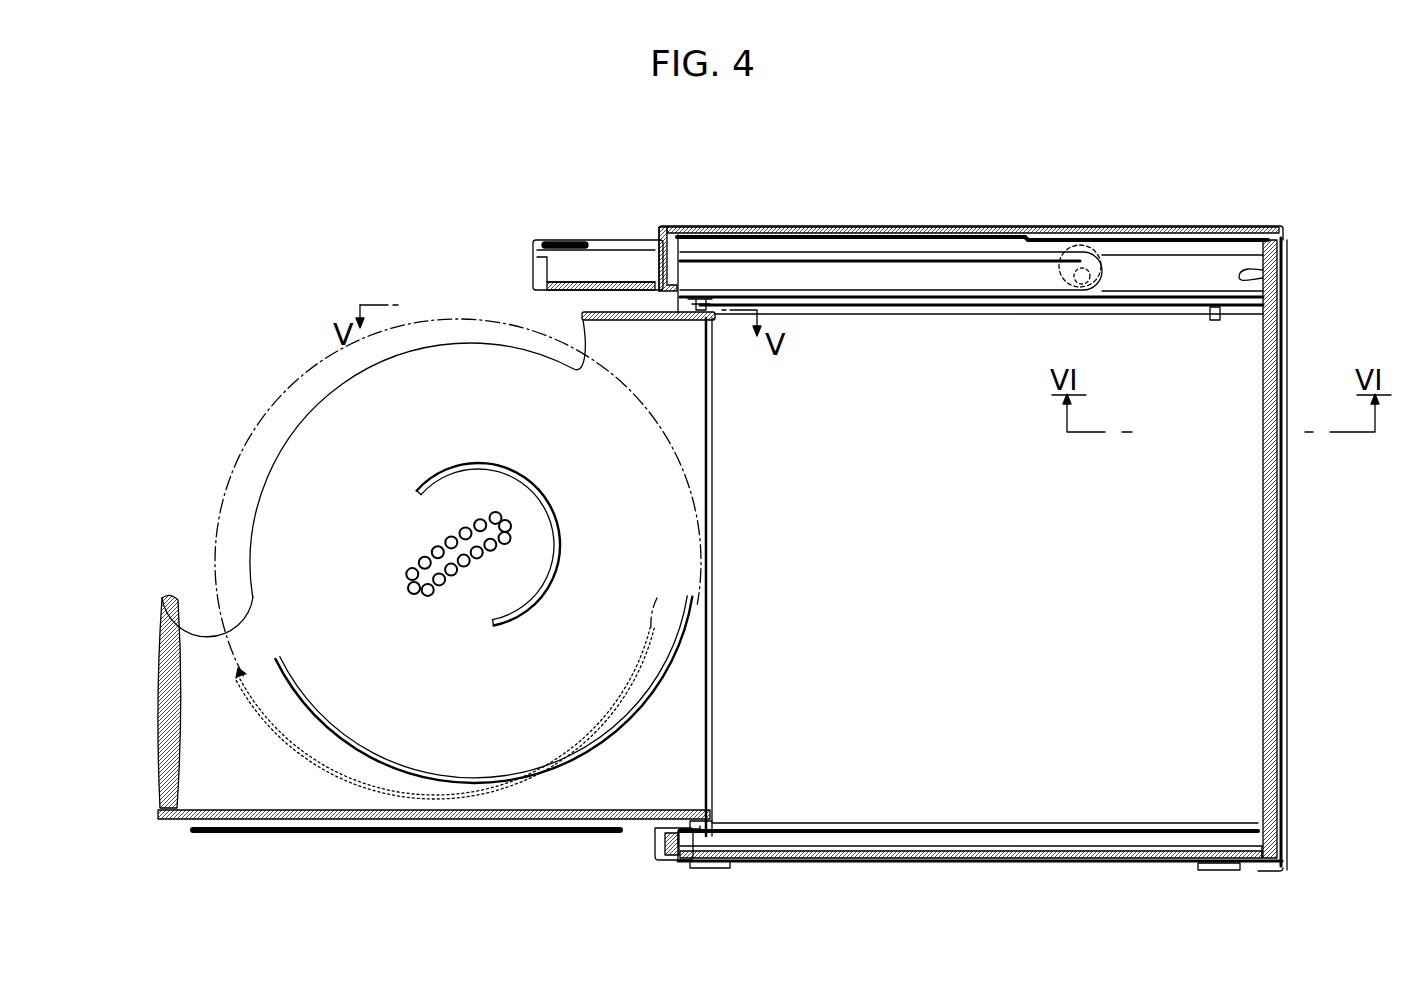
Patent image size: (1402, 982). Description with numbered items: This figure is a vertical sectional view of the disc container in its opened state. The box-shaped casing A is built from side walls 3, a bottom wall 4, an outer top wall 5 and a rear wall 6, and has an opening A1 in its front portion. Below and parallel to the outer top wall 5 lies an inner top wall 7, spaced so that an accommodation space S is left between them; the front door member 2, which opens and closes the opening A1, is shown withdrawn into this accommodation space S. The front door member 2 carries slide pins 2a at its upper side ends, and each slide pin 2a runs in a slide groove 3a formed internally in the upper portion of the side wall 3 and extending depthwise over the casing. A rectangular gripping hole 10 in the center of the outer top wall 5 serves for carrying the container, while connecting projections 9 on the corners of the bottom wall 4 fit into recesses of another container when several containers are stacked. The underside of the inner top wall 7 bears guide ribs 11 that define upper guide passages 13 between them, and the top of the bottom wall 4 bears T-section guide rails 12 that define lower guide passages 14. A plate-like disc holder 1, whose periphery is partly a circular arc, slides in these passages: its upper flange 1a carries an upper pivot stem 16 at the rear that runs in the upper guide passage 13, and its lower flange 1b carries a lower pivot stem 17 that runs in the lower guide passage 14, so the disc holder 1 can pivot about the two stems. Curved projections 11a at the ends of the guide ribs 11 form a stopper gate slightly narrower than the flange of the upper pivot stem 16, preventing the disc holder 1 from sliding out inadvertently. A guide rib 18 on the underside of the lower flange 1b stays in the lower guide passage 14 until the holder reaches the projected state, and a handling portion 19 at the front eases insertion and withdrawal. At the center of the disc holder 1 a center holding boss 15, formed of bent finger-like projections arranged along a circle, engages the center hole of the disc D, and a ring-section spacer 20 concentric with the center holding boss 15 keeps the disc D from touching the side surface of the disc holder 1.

The disc holder 1 is at (728, 700).
The upper flange 1a is at (612, 311).
The lower flange 1b is at (312, 820).
The front door member 2 is at (843, 236).
The slide pin 2a is at (1078, 246).
The side wall 3 is at (1233, 393).
The slide groove 3a is at (1265, 275).
The bottom wall 4 is at (1047, 863).
The outer top wall 5 is at (770, 227).
The rear wall 6 is at (1285, 492).
The inner top wall 7 is at (930, 290).
The connecting projection 9 is at (712, 868).
The gripping hole 10 is at (1003, 233).
The guide rib 11 is at (1000, 317).
The curved projection 11a is at (1215, 321).
The guide rail 12 is at (1133, 828).
The upper guide passage 13 is at (872, 308).
The lower guide passage 14 is at (1000, 822).
The center holding boss 15 is at (492, 516).
The upper pivot stem 16 is at (705, 298).
The lower pivot stem 17 is at (712, 826).
The guide rib 18 is at (533, 834).
The handling portion 19 is at (161, 597).
The spacer 20 is at (566, 522).
The casing A is at (1244, 226).
The opening A1 is at (677, 320).
The disc D is at (240, 570).
The accommodation space S is at (1157, 278).